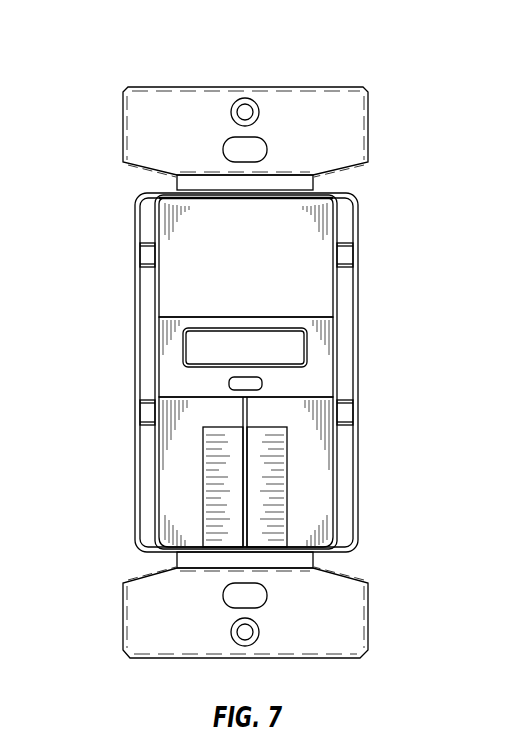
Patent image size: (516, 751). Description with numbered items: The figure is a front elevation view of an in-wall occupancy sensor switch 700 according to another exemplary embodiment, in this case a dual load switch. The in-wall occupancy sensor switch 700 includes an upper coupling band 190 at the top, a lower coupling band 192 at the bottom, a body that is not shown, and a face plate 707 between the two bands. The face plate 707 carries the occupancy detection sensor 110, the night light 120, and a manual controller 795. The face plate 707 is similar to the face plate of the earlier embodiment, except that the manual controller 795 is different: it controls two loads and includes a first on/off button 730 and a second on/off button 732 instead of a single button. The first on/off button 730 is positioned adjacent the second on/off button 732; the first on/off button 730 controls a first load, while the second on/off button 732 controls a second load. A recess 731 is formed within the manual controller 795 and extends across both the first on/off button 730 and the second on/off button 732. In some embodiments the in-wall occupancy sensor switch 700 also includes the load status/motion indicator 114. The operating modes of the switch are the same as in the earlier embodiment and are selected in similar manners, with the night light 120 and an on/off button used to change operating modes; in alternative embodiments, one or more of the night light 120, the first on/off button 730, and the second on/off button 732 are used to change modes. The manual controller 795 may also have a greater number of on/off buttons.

The in-wall occupancy sensor switch 700 is at (122, 87).
The upper coupling band 190 is at (349, 140).
The lower coupling band 192 is at (368, 618).
The face plate 707 is at (337, 337).
The occupancy detection sensor 110 is at (261, 267).
The night light 120 is at (202, 340).
The load status/motion indicator 114 is at (263, 385).
The first on/off button 730 is at (173, 507).
The manual controller 795 is at (177, 452).
The second on/off button 732 is at (312, 463).
The recess 731 is at (262, 505).